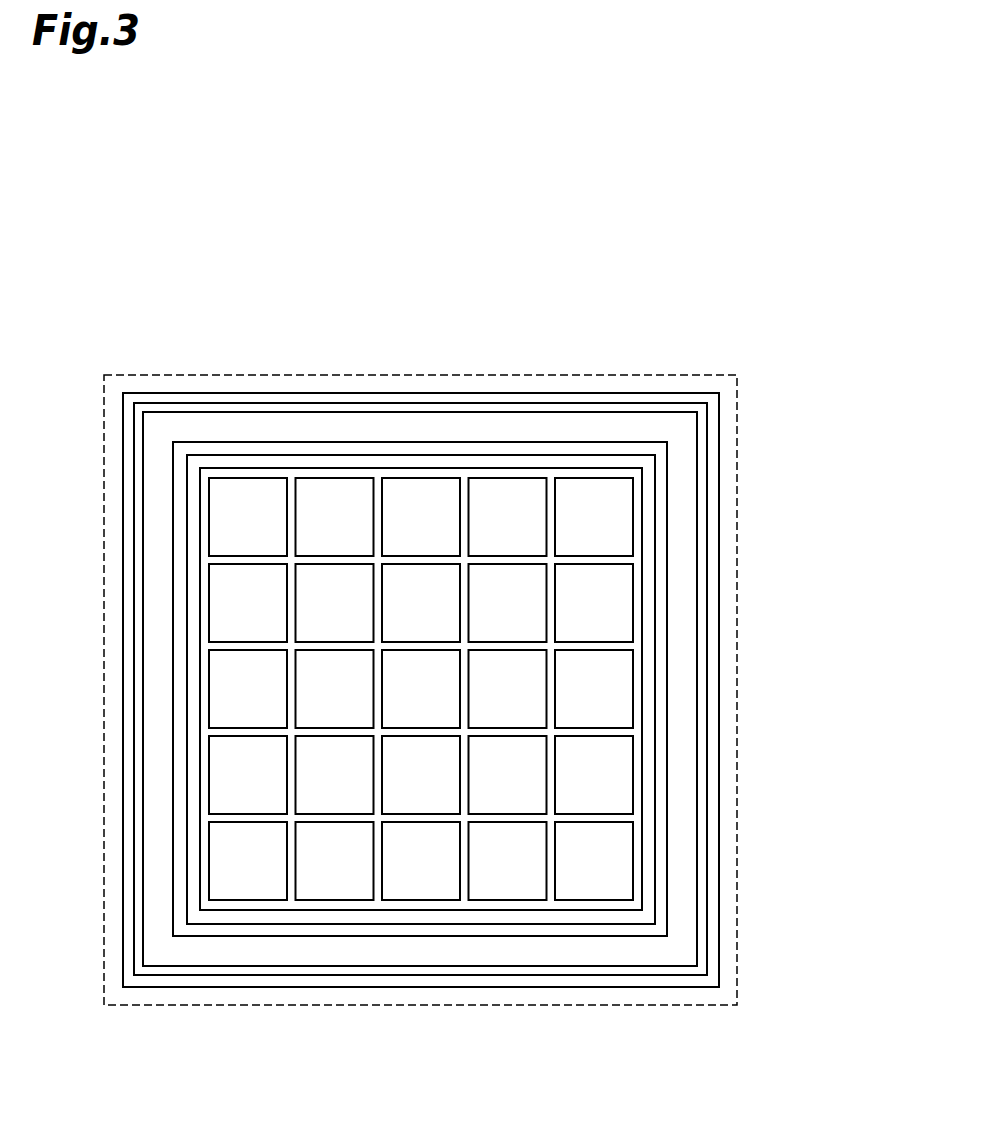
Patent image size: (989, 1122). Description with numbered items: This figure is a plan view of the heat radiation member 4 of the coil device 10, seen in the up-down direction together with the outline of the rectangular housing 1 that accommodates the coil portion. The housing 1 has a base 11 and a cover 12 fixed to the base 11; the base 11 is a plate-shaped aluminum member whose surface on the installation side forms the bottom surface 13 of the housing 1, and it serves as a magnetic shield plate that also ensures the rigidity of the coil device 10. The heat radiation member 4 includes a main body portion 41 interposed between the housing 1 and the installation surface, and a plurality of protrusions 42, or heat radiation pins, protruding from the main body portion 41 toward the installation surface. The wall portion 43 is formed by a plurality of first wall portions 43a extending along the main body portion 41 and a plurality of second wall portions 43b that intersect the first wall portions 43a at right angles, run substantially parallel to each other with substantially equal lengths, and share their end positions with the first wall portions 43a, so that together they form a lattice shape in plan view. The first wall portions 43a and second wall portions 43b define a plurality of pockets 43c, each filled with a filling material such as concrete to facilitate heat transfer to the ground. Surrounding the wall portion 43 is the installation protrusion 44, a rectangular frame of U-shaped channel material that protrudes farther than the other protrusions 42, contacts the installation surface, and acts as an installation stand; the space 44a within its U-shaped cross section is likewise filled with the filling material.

The coil device 10 is at (792, 181).
The housing 1 is at (828, 428).
The base 11 is at (719, 563).
The cover 12 is at (737, 445).
The bottom surface 13 is at (712, 540).
The heat radiation member 4 is at (666, 396).
The main body portion 41 is at (581, 913).
The protrusions 42 is at (421, 602).
The wall portion 43 is at (595, 295).
The first wall portions 43a is at (373, 512).
The second wall portions 43b is at (410, 468).
The pockets 43c is at (445, 530).
The installation protrusion 44 is at (348, 969).
The space 44a is at (429, 951).